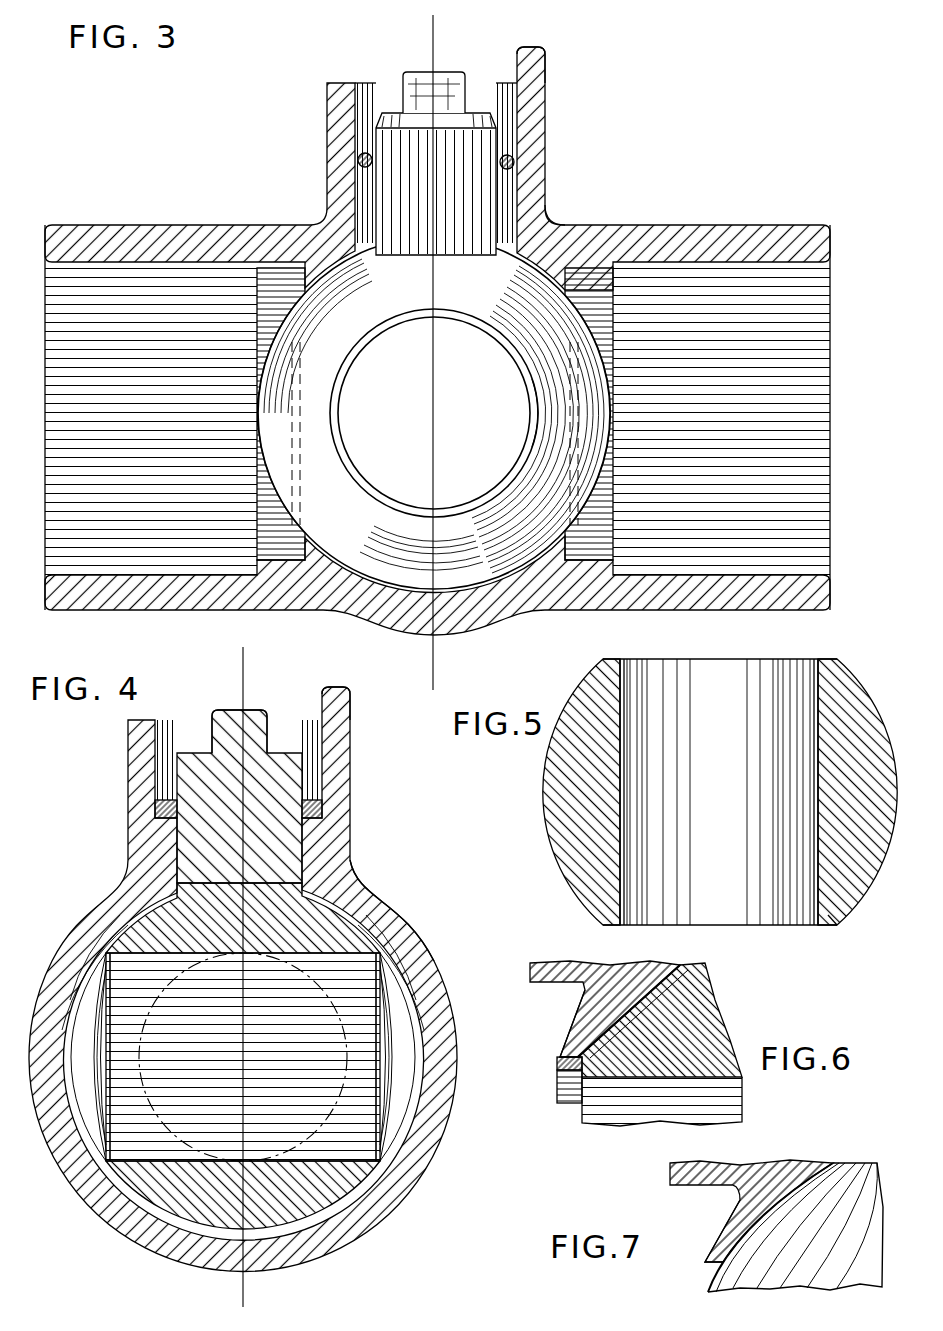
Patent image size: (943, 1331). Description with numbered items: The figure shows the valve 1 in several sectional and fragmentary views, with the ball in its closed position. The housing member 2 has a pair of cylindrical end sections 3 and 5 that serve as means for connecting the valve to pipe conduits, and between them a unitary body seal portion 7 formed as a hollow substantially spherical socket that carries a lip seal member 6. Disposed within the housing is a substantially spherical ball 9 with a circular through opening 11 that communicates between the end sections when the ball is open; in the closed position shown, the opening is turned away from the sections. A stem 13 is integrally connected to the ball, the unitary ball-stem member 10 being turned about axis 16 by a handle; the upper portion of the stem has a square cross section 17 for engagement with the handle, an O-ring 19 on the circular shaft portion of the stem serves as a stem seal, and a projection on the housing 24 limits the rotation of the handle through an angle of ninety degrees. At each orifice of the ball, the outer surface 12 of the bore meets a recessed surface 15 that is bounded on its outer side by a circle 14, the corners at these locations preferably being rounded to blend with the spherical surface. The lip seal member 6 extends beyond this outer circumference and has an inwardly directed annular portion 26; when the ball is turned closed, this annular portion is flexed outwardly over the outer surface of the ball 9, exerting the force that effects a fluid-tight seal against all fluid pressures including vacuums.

In FIG. 3, the valve 1 is at (293, 191).
In FIG. 3, the housing member 2 is at (467, 636).
In FIG. 4, the housing member 2 is at (137, 1243).
In FIG. 6, the housing member 2 is at (605, 1009).
In FIG. 7, the housing member 2 is at (751, 1211).
In FIG. 3, the cylindrical end section 3 is at (108, 471).
In FIG. 3, the cylindrical end section 5 is at (663, 418).
In FIG. 3, the lip seal member 6 is at (292, 406).
In FIG. 4, the lip seal member 6 is at (347, 1100).
In FIG. 6, the lip seal member 6 is at (583, 1036).
In FIG. 7, the lip seal member 6 is at (740, 1233).
In FIG. 3, the body seal portion 7 is at (520, 577).
In FIG. 3, the ball 9 is at (617, 397).
In FIG. 4, the ball 9 is at (404, 911).
In FIG. 5, the ball 9 is at (855, 731).
In FIG. 6, the ball 9 is at (701, 1023).
In FIG. 7, the ball 9 is at (838, 1248).
In FIG. 3, the ball-stem member 10 is at (521, 240).
In FIG. 4, the ball-stem member 10 is at (347, 853).
In FIG. 3, the circular through opening 11 is at (448, 438).
In FIG. 4, the circular through opening 11 is at (257, 1072).
In FIG. 3, the outer surface of the bore 12 is at (625, 434).
In FIG. 4, the outer surface of the bore 12 is at (243, 1057).
In FIG. 5, the outer surface of the bore 12 is at (813, 863).
In FIG. 6, the outer surface of the bore 12 is at (710, 1080).
In FIG. 3, the stem 13 is at (487, 205).
In FIG. 4, the stem 13 is at (290, 798).
In FIG. 3, the circle 14 is at (597, 416).
In FIG. 5, the circle 14 is at (836, 926).
In FIG. 3, the surface 15 is at (338, 395).
In FIG. 4, the surface 15 is at (382, 1168).
In FIG. 5, the surface 15 is at (836, 660).
In FIG. 6, the surface 15 is at (557, 1066).
In FIG. 3, the axis 16 is at (433, 25).
In FIG. 4, the axis 16 is at (243, 666).
In FIG. 3, the square cross section 17 is at (448, 70).
In FIG. 4, the square cross section 17 is at (252, 710).
In FIG. 3, the O-ring 19 is at (366, 152).
In FIG. 4, the O-ring 19 is at (161, 806).
In FIG. 3, the projection on the housing 24 is at (540, 46).
In FIG. 4, the projection on the housing 24 is at (342, 688).
In FIG. 6, the inwardly directed annular portion 26 is at (583, 1058).
In FIG. 7, the inwardly directed annular portion 26 is at (738, 1272).